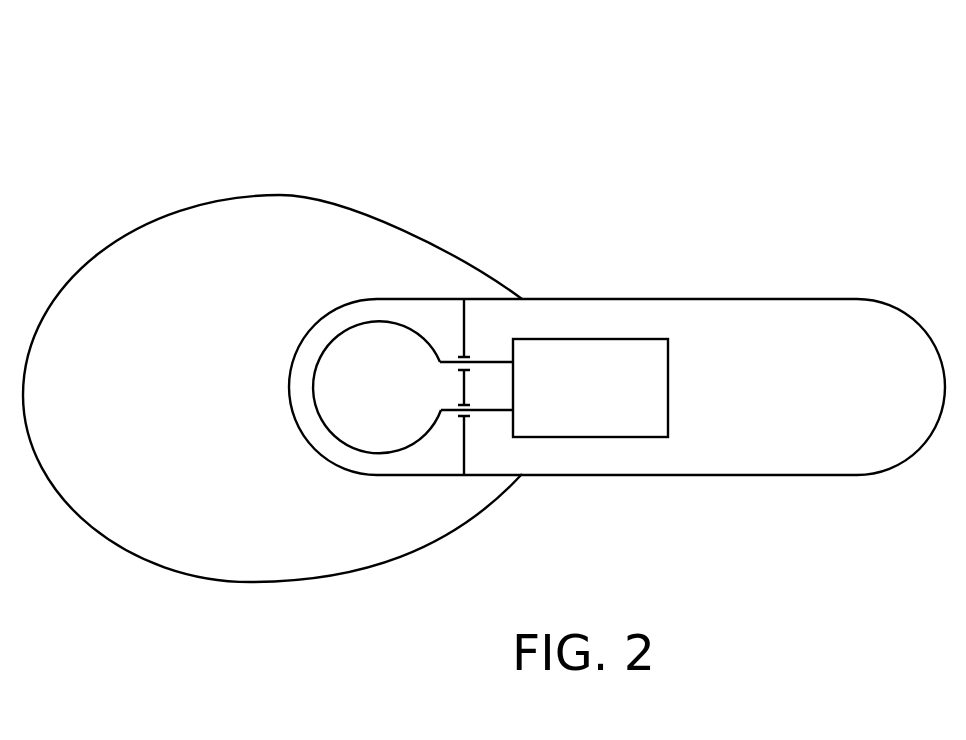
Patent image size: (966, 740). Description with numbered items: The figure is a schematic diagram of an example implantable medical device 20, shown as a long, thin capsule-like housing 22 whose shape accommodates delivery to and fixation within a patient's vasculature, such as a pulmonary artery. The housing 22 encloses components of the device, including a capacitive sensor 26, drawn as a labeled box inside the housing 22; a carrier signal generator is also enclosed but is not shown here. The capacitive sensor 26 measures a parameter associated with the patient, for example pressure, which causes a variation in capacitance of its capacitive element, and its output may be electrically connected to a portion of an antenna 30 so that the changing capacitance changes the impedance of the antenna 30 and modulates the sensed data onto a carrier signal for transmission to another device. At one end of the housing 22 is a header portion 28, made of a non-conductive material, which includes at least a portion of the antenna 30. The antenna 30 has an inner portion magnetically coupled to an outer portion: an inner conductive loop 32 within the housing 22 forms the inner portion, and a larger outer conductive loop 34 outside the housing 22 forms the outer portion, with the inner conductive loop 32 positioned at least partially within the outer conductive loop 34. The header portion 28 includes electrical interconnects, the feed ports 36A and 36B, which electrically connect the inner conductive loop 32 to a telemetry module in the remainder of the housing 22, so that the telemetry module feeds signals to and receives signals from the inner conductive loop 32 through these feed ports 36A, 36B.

The implantable medical device 20 is at (484, 301).
The housing 22 is at (744, 298).
The capacitive sensor 26 is at (608, 428).
The header portion 28 is at (373, 381).
The antenna 30 is at (589, 333).
The inner conductive loop 32 is at (314, 396).
The outer conductive loop 34 is at (203, 198).
The feed port 36A is at (477, 347).
The feed port 36B is at (477, 432).